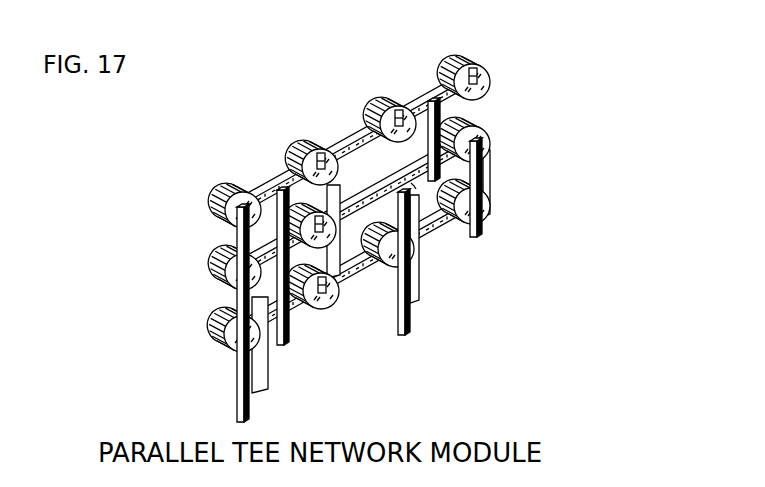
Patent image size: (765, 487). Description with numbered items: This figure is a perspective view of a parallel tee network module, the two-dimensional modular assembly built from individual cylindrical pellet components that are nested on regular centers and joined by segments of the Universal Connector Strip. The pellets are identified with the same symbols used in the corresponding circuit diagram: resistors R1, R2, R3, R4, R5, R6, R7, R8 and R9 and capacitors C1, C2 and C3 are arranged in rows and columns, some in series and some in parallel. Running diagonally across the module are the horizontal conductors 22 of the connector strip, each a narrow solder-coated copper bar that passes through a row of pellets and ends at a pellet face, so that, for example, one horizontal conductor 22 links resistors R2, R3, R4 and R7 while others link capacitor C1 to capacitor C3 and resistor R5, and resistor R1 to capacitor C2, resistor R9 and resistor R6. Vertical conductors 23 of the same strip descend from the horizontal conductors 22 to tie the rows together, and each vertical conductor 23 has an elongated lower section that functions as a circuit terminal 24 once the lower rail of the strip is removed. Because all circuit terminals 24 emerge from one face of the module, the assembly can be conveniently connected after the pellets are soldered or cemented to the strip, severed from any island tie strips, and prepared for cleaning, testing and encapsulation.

The horizontal conductor 22 is at (339, 140).
The vertical conductor 23 is at (492, 170).
The circuit terminal 24 is at (418, 327).
The resistor pellet R1 is at (219, 329).
The resistor pellet R2 is at (220, 205).
The resistor pellet R3 is at (311, 151).
The resistor pellet R4 is at (387, 109).
The resistor pellet R5 is at (482, 139).
The resistor pellet R6 is at (481, 201).
The resistor pellet R7 is at (482, 77).
The resistor pellet R8 is at (411, 190).
The resistor pellet R9 is at (407, 253).
The capacitor pellet C1 is at (220, 267).
The capacitor pellet C2 is at (312, 300).
The capacitor pellet C3 is at (338, 242).